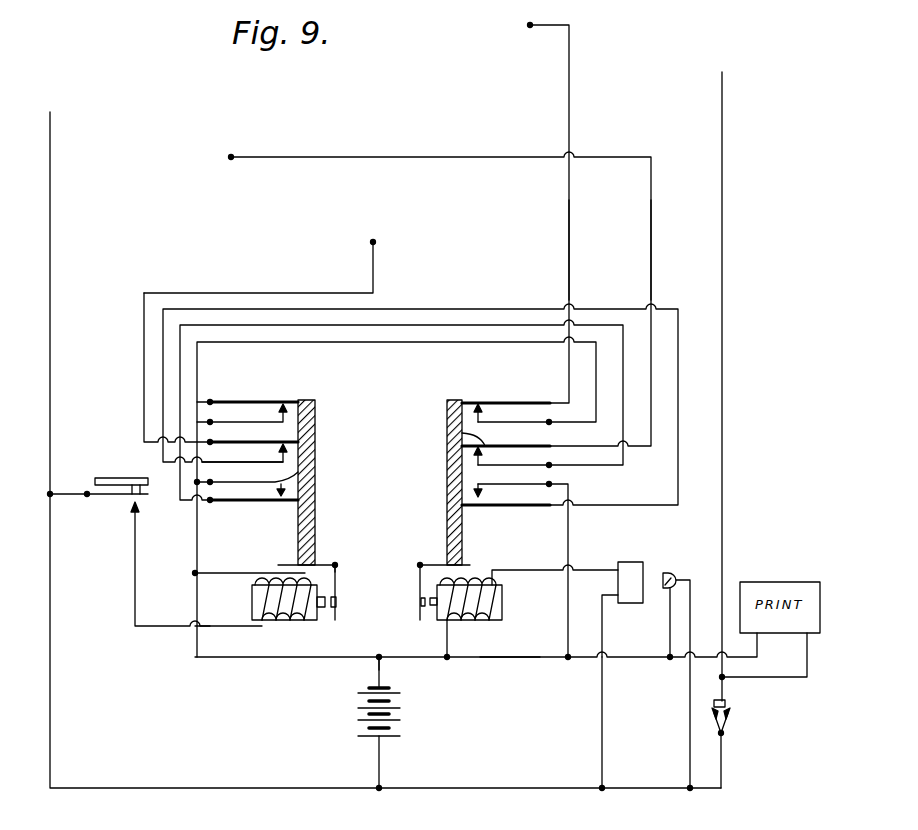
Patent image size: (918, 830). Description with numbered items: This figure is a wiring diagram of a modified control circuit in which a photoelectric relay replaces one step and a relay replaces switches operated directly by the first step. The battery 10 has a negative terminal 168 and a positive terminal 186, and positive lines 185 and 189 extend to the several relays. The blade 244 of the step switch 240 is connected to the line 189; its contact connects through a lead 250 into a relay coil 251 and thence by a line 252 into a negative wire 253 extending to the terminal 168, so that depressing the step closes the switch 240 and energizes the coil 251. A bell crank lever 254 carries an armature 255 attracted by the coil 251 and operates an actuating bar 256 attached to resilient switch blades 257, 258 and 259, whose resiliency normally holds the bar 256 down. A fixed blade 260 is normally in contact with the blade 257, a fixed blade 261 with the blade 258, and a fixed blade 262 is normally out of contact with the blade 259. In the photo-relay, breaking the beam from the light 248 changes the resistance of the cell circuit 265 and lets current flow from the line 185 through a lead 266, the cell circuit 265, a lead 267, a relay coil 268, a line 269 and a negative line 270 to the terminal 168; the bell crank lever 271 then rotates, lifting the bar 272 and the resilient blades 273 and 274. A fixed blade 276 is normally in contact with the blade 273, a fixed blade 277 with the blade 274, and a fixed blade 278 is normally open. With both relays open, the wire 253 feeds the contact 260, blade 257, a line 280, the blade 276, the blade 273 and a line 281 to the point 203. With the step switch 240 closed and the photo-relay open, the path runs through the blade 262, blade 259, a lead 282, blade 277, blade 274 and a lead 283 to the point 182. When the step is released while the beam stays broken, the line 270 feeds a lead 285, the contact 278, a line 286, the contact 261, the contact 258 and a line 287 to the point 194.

The battery 10 is at (396, 718).
The negative terminal 168 is at (381, 655).
The point 182 is at (231, 157).
The positive line 185 is at (722, 230).
The positive terminal 186 is at (379, 788).
The positive line 189 is at (50, 203).
The point 194 is at (373, 242).
The point 203 is at (527, 27).
The step switch 240 is at (95, 478).
The blade 244 is at (108, 497).
The light 248 is at (672, 575).
The lead 250 is at (135, 572).
The relay coil 251 is at (297, 607).
The line 252 is at (232, 573).
The negative wire 253 is at (195, 657).
The bell crank lever 254 is at (340, 575).
The armature 255 is at (338, 605).
The actuating bar 256 is at (315, 517).
The resilient switch blade 257 is at (283, 400).
The resilient switch blade 258 is at (283, 440).
The resilient switch blade 259 is at (235, 503).
The fixed blade 260 is at (235, 420).
The fixed blade 261 is at (266, 462).
The fixed blade 262 is at (315, 483).
The cell circuit 265 is at (634, 603).
The lead 266 is at (602, 732).
The lead 267 is at (553, 556).
The relay coil 268 is at (490, 621).
The line 269 is at (450, 645).
The negative line 270 is at (503, 660).
The bell crank lever 271 is at (418, 580).
The bar 272 is at (445, 476).
The resilient switch blade 273 is at (503, 400).
The resilient switch blade 274 is at (447, 437).
The fixed blade 276 is at (535, 422).
The fixed blade 277 is at (530, 465).
The fixed blade 278 is at (552, 481).
The line 280 is at (328, 342).
The line 281 is at (569, 235).
The lead 282 is at (390, 327).
The lead 283 is at (651, 254).
The lead 285 is at (602, 600).
The line 286 is at (430, 310).
The line 287 is at (144, 350).